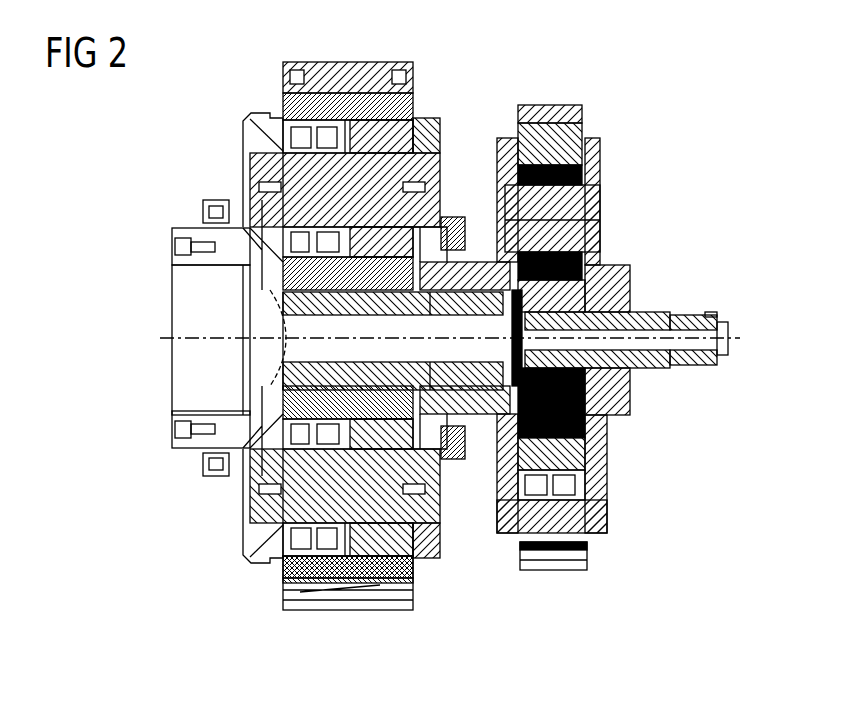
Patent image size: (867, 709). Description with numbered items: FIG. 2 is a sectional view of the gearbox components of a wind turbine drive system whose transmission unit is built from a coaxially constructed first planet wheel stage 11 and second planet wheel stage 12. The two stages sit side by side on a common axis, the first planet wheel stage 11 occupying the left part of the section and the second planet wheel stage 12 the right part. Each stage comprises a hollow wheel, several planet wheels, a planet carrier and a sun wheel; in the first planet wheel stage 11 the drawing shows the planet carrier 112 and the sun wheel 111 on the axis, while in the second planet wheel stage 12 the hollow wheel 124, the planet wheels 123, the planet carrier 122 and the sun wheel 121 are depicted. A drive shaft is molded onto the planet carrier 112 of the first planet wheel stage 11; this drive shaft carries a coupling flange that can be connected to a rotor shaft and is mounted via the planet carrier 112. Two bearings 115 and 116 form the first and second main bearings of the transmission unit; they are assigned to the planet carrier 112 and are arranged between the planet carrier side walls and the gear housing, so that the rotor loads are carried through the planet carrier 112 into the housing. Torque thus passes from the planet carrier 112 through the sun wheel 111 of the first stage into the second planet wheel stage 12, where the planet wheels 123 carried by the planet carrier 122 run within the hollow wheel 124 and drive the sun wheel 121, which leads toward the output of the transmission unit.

The first planet wheel stage 11 is at (270, 591).
The second planet wheel stage 12 is at (504, 562).
The sun wheel 111 is at (313, 358).
The planet carrier 112 is at (250, 141).
The bearing 115 is at (205, 212).
The bearing 116 is at (447, 217).
The sun wheel 121 is at (605, 308).
The planet carrier 122 is at (600, 156).
The planet wheels 123 is at (412, 108).
The hollow wheel 124 is at (350, 600).